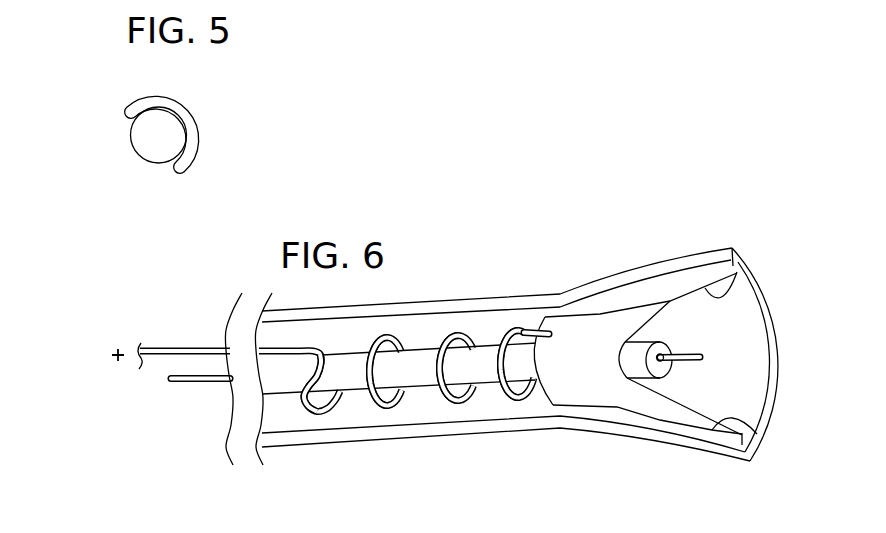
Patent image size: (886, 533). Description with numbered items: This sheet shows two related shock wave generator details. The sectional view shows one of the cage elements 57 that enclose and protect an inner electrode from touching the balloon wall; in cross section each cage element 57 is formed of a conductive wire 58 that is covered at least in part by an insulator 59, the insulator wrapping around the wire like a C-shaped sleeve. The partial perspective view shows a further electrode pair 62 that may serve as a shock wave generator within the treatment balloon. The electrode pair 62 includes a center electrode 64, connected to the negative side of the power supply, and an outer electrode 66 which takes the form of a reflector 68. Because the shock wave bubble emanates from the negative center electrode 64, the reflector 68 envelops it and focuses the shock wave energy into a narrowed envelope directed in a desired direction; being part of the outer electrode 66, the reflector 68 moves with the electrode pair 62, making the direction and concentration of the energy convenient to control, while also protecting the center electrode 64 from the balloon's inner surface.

In FIG. 5, the cage elements 57 is at (394, 83).
In FIG. 5, the conductive wire 58 is at (145, 140).
In FIG. 5, the insulator 59 is at (155, 98).
In FIG. 6, the electrode pair 62 is at (467, 334).
In FIG. 6, the center electrode 64 is at (690, 362).
In FIG. 6, the outer electrode 66 is at (660, 303).
In FIG. 6, the reflector 68 is at (740, 281).